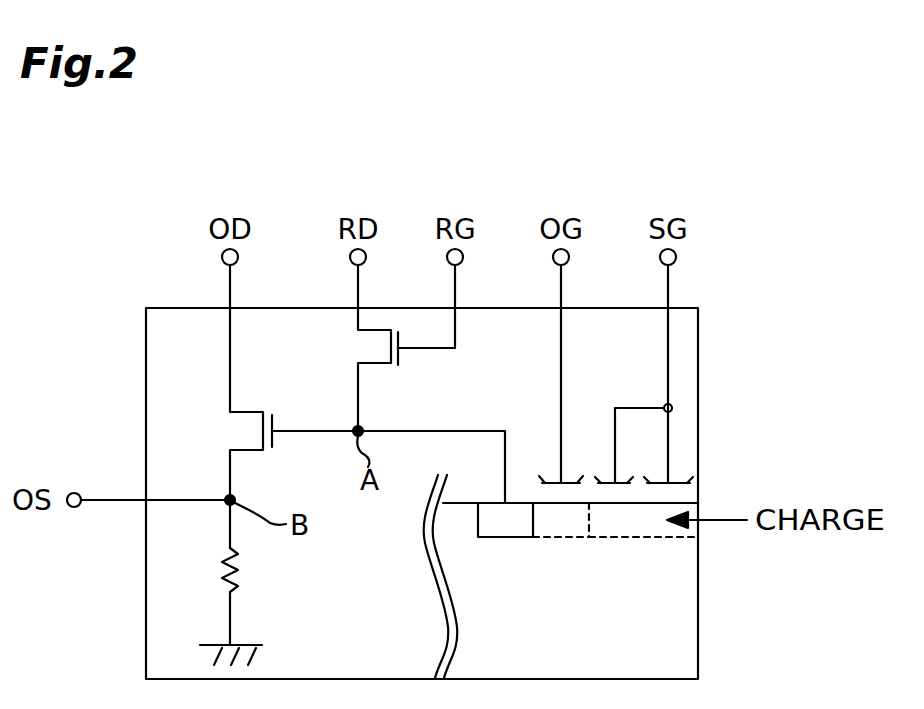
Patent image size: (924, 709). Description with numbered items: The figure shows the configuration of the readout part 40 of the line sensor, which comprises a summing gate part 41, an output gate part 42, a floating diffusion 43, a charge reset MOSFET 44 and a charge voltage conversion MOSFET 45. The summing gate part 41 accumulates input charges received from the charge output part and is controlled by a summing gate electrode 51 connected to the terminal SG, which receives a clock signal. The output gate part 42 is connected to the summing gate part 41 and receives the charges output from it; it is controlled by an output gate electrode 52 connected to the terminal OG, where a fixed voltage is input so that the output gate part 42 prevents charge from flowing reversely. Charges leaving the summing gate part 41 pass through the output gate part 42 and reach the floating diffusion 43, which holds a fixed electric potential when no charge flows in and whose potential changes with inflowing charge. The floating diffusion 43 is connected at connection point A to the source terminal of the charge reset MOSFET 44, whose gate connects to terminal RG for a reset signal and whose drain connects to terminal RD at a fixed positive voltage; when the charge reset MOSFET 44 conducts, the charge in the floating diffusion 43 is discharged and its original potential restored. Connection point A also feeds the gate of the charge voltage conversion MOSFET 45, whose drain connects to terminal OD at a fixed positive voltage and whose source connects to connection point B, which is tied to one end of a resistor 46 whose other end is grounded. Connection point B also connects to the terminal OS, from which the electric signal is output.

The readout part 40 is at (698, 392).
The summing gate part 41 is at (660, 537).
The output gate part 42 is at (574, 537).
The floating diffusion 43 is at (505, 537).
The charge reset MOSFET 44 is at (383, 366).
The charge voltage conversion MOSFET 45 is at (265, 450).
The resistor 46 is at (237, 557).
The summing gate electrode 51 is at (620, 482).
The output gate electrode 52 is at (552, 480).